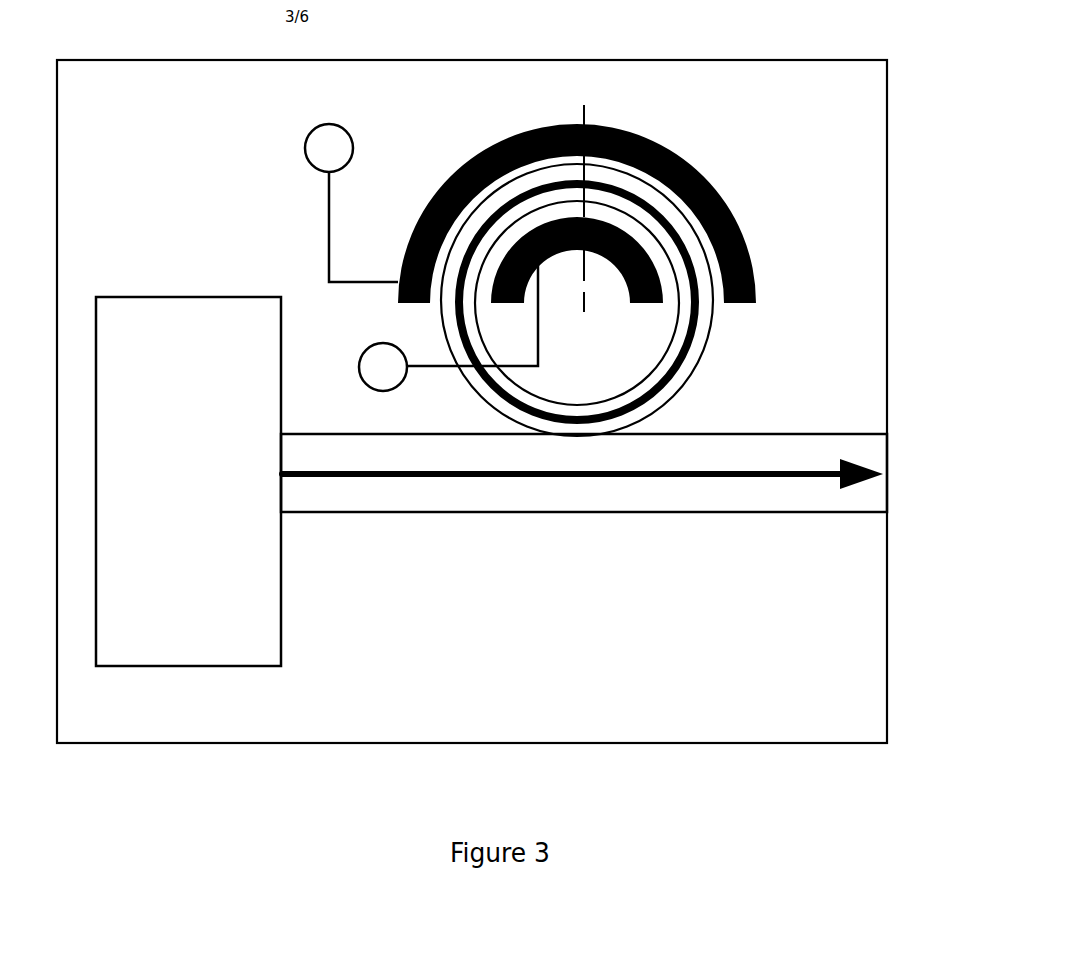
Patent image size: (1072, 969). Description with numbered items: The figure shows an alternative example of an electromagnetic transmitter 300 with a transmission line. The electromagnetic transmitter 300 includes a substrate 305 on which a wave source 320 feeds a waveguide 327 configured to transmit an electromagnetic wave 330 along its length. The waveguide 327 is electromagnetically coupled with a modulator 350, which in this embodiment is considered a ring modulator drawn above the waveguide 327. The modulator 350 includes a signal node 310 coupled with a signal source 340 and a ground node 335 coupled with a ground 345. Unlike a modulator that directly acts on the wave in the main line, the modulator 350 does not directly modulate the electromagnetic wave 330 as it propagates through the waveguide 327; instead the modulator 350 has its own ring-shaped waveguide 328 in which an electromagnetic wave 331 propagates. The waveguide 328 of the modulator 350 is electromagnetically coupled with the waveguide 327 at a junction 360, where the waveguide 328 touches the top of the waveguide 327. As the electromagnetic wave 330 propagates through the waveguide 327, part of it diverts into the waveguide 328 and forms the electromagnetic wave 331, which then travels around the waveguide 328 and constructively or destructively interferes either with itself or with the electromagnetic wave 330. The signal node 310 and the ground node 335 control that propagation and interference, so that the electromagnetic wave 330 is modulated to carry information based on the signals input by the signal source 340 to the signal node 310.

The electromagnetic transmitter 300 is at (933, 130).
The substrate 305 is at (472, 401).
The signal node 310 is at (680, 156).
The wave source 320 is at (188, 481).
The waveguide 327 is at (515, 513).
The waveguide 328 is at (687, 380).
The electromagnetic wave 330 is at (857, 485).
The electromagnetic wave 331 is at (700, 327).
The ground node 335 is at (505, 305).
The signal source 340 is at (327, 147).
The ground 345 is at (383, 367).
The modulator 350 is at (738, 178).
The junction 360 is at (583, 452).